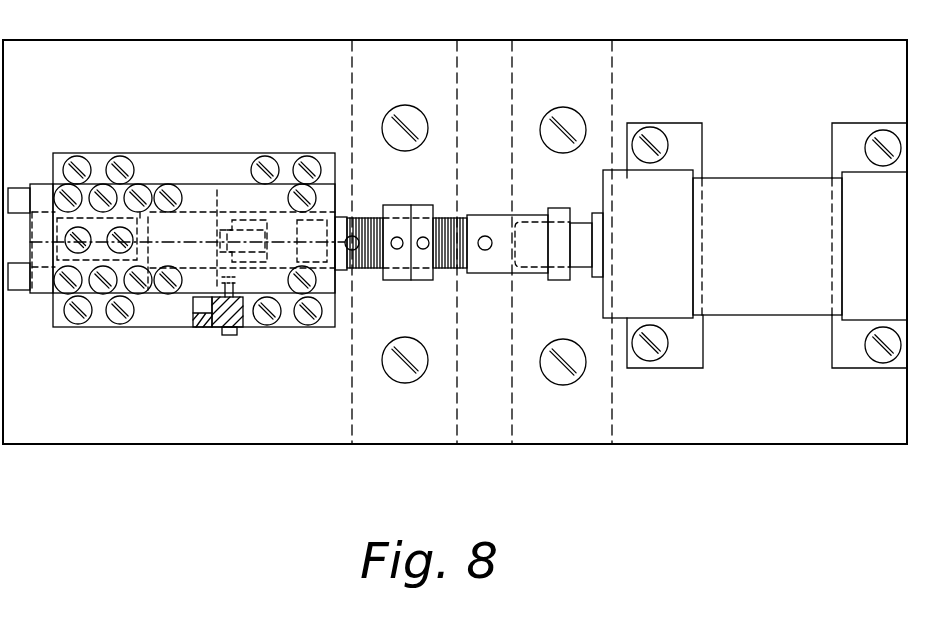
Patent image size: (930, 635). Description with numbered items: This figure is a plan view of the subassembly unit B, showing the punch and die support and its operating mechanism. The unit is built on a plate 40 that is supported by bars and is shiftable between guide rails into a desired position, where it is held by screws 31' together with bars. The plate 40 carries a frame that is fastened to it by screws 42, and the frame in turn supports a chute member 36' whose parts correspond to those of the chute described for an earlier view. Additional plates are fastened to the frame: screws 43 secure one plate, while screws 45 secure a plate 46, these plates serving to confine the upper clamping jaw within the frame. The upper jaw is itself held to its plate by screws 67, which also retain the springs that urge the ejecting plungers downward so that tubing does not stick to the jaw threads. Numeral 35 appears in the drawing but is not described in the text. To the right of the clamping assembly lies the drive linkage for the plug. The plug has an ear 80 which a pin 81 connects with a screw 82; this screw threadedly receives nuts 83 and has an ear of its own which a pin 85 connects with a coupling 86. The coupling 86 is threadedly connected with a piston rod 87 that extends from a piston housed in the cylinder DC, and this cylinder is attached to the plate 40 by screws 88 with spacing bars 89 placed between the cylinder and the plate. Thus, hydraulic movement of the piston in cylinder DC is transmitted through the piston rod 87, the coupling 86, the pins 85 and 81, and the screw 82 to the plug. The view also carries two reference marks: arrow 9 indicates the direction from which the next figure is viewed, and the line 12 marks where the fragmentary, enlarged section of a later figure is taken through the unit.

The subassembly unit B is at (293, 40).
The arrow 9 is at (508, 456).
The section line 12— 12 is at (45, 240).
The screws 31' is at (484, 245).
The pin 35 is at (240, 338).
The chute member 36' is at (181, 335).
The plate 40 is at (703, 444).
The screws 42 is at (115, 157).
The screws 43 is at (288, 195).
The screws 45 is at (17, 187).
The plate 46 is at (42, 296).
The screws 67 is at (79, 253).
The ear 80 is at (352, 272).
The pin 81 is at (355, 250).
The screw 82 is at (458, 218).
The nuts 83 is at (423, 280).
The pin 85 is at (485, 250).
The coupling 86 is at (522, 275).
The piston rod 87 is at (582, 213).
The screws 88 is at (867, 140).
The spacing bars 89 is at (832, 332).
The cylinder DC is at (782, 161).